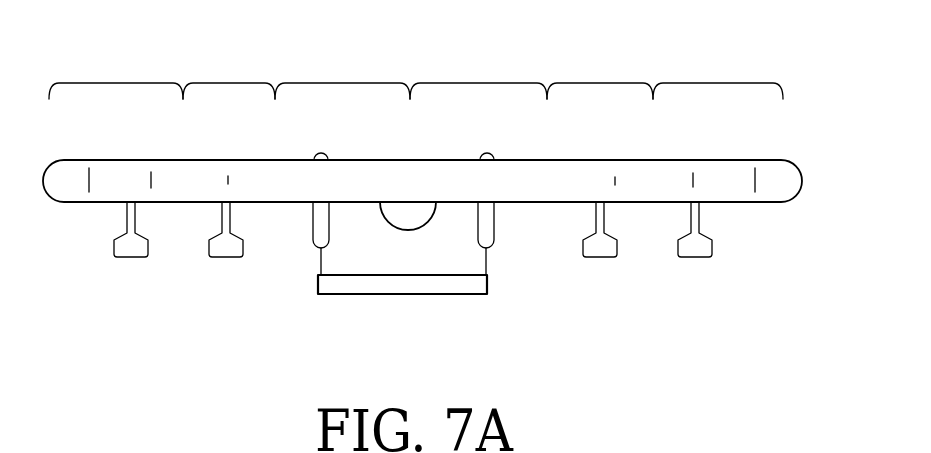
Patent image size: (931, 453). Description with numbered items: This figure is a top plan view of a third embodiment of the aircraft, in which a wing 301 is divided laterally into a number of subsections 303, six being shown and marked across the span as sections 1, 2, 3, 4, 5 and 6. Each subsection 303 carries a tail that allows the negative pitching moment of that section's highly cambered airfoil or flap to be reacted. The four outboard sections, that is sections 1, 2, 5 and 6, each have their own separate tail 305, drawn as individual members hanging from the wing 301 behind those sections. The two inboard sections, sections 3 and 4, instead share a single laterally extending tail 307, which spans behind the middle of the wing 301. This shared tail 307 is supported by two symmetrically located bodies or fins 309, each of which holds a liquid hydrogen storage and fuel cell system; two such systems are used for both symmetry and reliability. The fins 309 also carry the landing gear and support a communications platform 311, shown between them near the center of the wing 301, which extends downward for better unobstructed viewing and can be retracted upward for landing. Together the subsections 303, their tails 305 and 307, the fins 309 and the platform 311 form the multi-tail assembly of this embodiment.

The first section 1 is at (117, 82).
The second section 2 is at (236, 82).
The third section 3 is at (352, 82).
The fourth section 4 is at (474, 82).
The fifth section 5 is at (597, 82).
The sixth section 6 is at (721, 82).
The wing 301 is at (550, 187).
The subsection 303 is at (500, 178).
The tail 305 is at (229, 246).
The laterally extending tail 307 is at (395, 285).
The fin 309 is at (494, 237).
The communications platform 311 is at (400, 218).